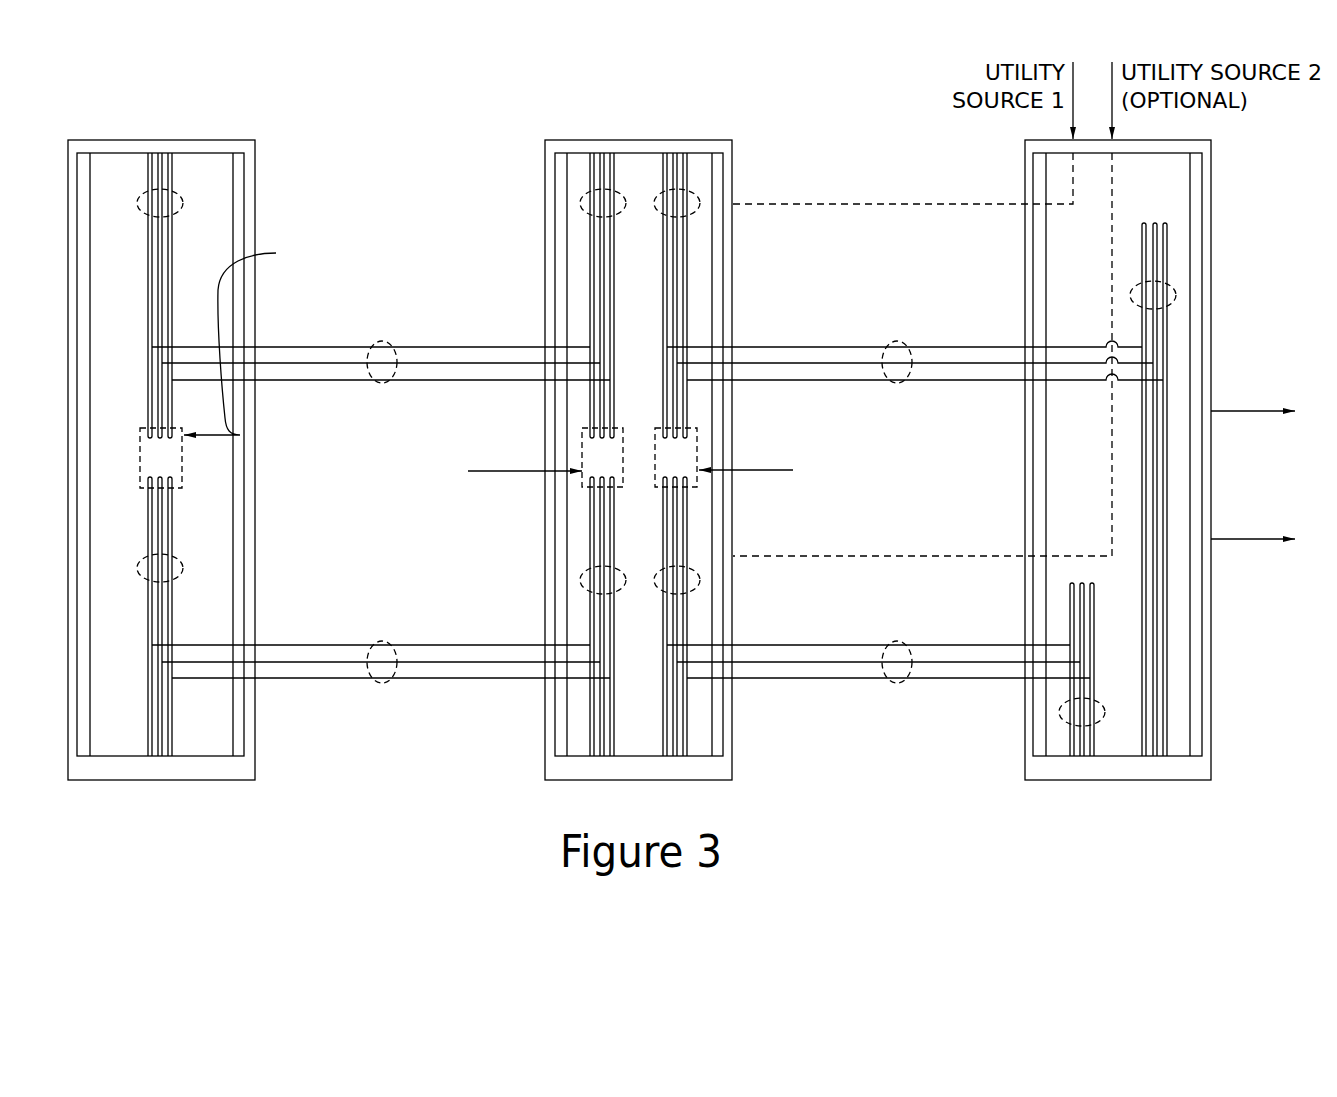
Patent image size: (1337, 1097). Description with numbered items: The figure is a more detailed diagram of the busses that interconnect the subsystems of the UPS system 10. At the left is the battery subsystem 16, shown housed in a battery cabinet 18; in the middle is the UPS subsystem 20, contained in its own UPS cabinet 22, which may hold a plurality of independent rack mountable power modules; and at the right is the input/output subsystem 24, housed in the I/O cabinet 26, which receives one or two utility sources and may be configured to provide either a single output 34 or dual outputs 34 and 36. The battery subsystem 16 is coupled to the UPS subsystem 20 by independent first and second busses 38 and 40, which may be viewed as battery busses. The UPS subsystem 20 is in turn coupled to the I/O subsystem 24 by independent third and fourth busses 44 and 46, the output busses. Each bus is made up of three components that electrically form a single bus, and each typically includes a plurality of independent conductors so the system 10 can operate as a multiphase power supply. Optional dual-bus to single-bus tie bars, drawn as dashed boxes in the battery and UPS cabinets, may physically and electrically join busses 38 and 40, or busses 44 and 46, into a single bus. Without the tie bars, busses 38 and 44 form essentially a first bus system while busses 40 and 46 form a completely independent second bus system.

The UPS system 10 is at (444, 86).
The battery subsystem 16 is at (259, 745).
The cabinet 18 is at (165, 140).
The UPS subsystem 20 is at (737, 747).
The cabinet 22 is at (643, 140).
The input/output (I/O) subsystem 24 is at (1024, 752).
The I/O cabinet 26 is at (1213, 178).
The output 34 is at (1247, 411).
The output 36 is at (1240, 537).
The first bus 38 is at (492, 345).
The second bus 40 is at (287, 681).
The third bus 44 is at (993, 345).
The fourth bus 46 is at (763, 681).